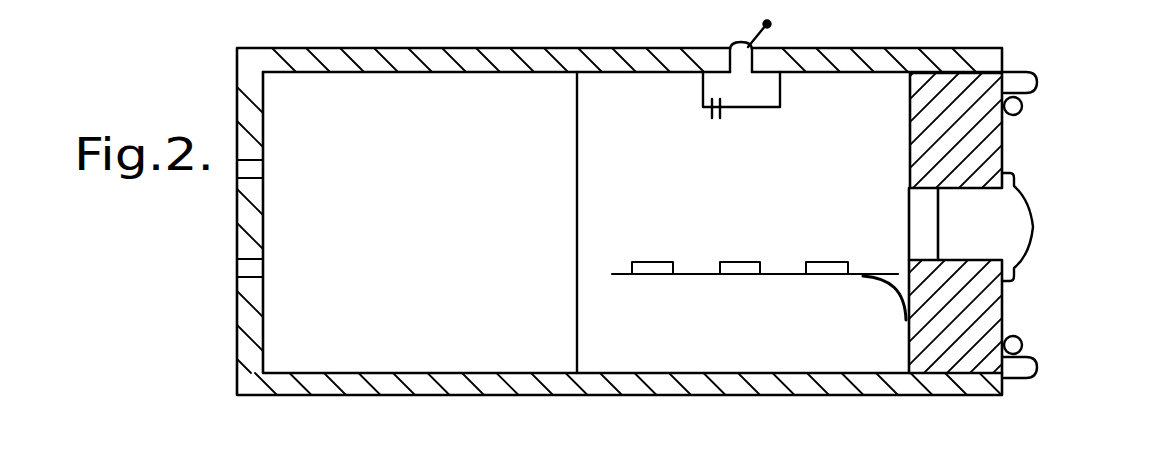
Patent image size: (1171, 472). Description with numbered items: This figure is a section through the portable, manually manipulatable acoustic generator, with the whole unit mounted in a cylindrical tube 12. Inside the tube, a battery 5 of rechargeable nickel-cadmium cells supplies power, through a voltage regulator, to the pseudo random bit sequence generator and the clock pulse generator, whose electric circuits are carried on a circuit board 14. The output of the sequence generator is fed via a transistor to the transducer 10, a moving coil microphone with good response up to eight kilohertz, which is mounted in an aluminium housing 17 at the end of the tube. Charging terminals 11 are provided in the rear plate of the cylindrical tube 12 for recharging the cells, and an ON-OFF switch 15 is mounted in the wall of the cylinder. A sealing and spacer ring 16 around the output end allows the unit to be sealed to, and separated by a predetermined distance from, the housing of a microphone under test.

The battery 5 is at (520, 342).
The transducer 10 is at (1012, 225).
The charging terminals 11 is at (247, 170).
The cylindrical tube 12 is at (387, 378).
The circuit board 14 is at (692, 275).
The ON-OFF switch 15 is at (752, 52).
The sealing and spacer ring 16 is at (1018, 108).
The aluminium housing 17 is at (970, 310).